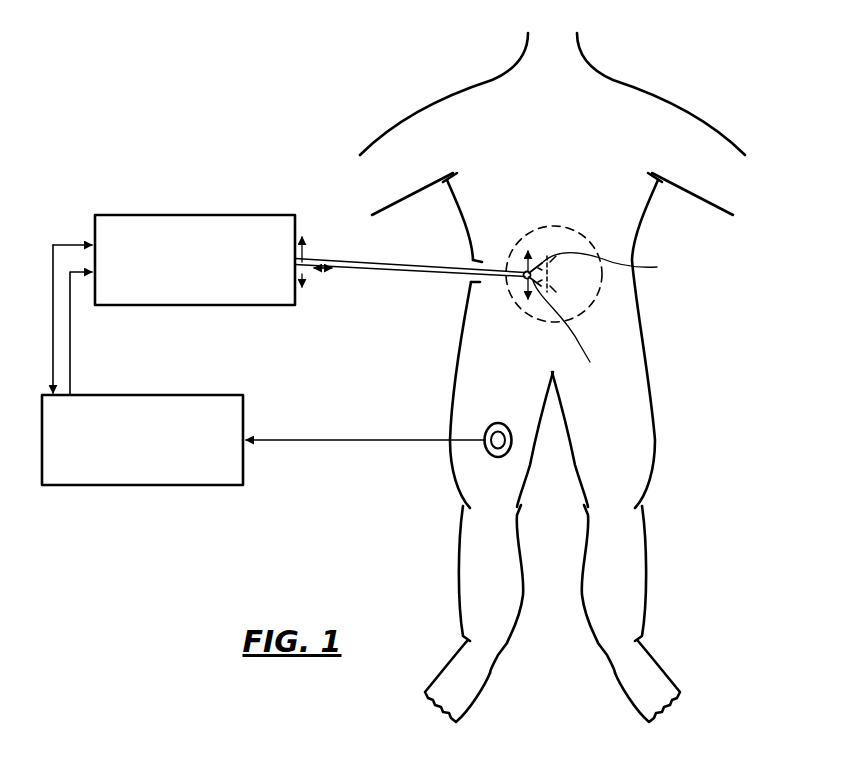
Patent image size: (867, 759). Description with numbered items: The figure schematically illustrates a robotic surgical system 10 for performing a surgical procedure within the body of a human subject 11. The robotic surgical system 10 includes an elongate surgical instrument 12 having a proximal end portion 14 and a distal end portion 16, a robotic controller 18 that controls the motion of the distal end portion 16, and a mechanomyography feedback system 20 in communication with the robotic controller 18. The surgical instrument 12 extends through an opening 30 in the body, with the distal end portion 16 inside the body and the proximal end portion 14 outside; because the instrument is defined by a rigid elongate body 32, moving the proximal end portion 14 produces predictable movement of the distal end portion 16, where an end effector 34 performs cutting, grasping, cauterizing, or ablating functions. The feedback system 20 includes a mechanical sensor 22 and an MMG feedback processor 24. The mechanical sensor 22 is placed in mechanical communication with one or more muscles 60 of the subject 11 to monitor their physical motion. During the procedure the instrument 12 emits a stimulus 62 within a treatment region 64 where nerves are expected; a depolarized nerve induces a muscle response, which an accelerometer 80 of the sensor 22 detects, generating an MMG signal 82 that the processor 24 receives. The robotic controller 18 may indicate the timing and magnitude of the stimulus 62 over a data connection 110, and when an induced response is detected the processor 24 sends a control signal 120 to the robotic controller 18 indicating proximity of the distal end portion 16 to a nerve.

The robotic surgical system 10 is at (132, 108).
The human subject 11 is at (643, 325).
The elongate surgical instrument 12 is at (391, 273).
The proximal end portion 14 is at (316, 244).
The distal end portion 16 is at (519, 259).
The robotic controller 18 is at (221, 215).
The mechanomyography (MMG) feedback system 20 is at (204, 555).
The mechanical sensor 22 is at (486, 428).
The MMG feedback processor 24 is at (112, 485).
The opening 30 is at (460, 283).
The rigid elongate body 32 is at (415, 263).
The end effector 34 is at (567, 332).
The muscles 60 is at (470, 486).
The stimulus 62 is at (612, 265).
The treatment region 64 is at (552, 227).
The accelerometer 80 is at (508, 422).
The mechanomyography (MMG) signal 82 is at (312, 442).
The data connection 110 is at (72, 245).
The control signal 120 is at (72, 335).